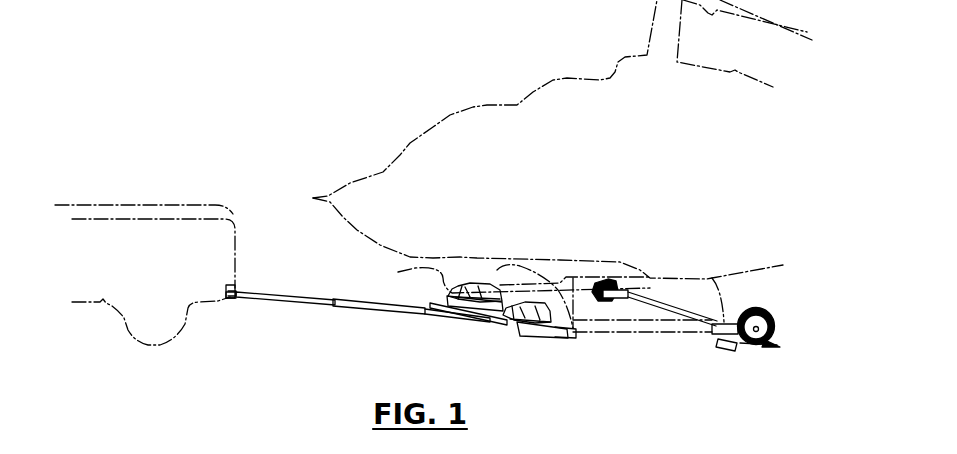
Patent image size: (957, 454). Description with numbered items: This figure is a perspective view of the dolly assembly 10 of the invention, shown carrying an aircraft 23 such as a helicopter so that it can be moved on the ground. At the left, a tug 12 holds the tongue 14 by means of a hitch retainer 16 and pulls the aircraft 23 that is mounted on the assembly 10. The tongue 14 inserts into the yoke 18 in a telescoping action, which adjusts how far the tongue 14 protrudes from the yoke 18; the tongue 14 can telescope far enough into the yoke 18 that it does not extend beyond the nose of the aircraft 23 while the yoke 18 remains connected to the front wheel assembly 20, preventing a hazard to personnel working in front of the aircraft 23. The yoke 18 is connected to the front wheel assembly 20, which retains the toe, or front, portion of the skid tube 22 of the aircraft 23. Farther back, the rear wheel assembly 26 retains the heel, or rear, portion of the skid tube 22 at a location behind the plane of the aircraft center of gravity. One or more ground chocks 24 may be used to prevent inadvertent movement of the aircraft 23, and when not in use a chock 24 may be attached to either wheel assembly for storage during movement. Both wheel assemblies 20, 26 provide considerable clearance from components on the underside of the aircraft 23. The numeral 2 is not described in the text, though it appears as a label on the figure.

The towing vehicle 2 is at (152, 211).
The dolly assembly 10 is at (575, 369).
The tug 12 is at (205, 181).
The tongue 14 is at (270, 293).
The hitch retainer 16 is at (238, 299).
The yoke 18 is at (389, 310).
The front wheel assembly 20 is at (500, 331).
The skid tube 22 is at (622, 356).
The aircraft 23 is at (490, 115).
The ground chock 24 is at (780, 345).
The rear wheel assembly 26 is at (668, 298).